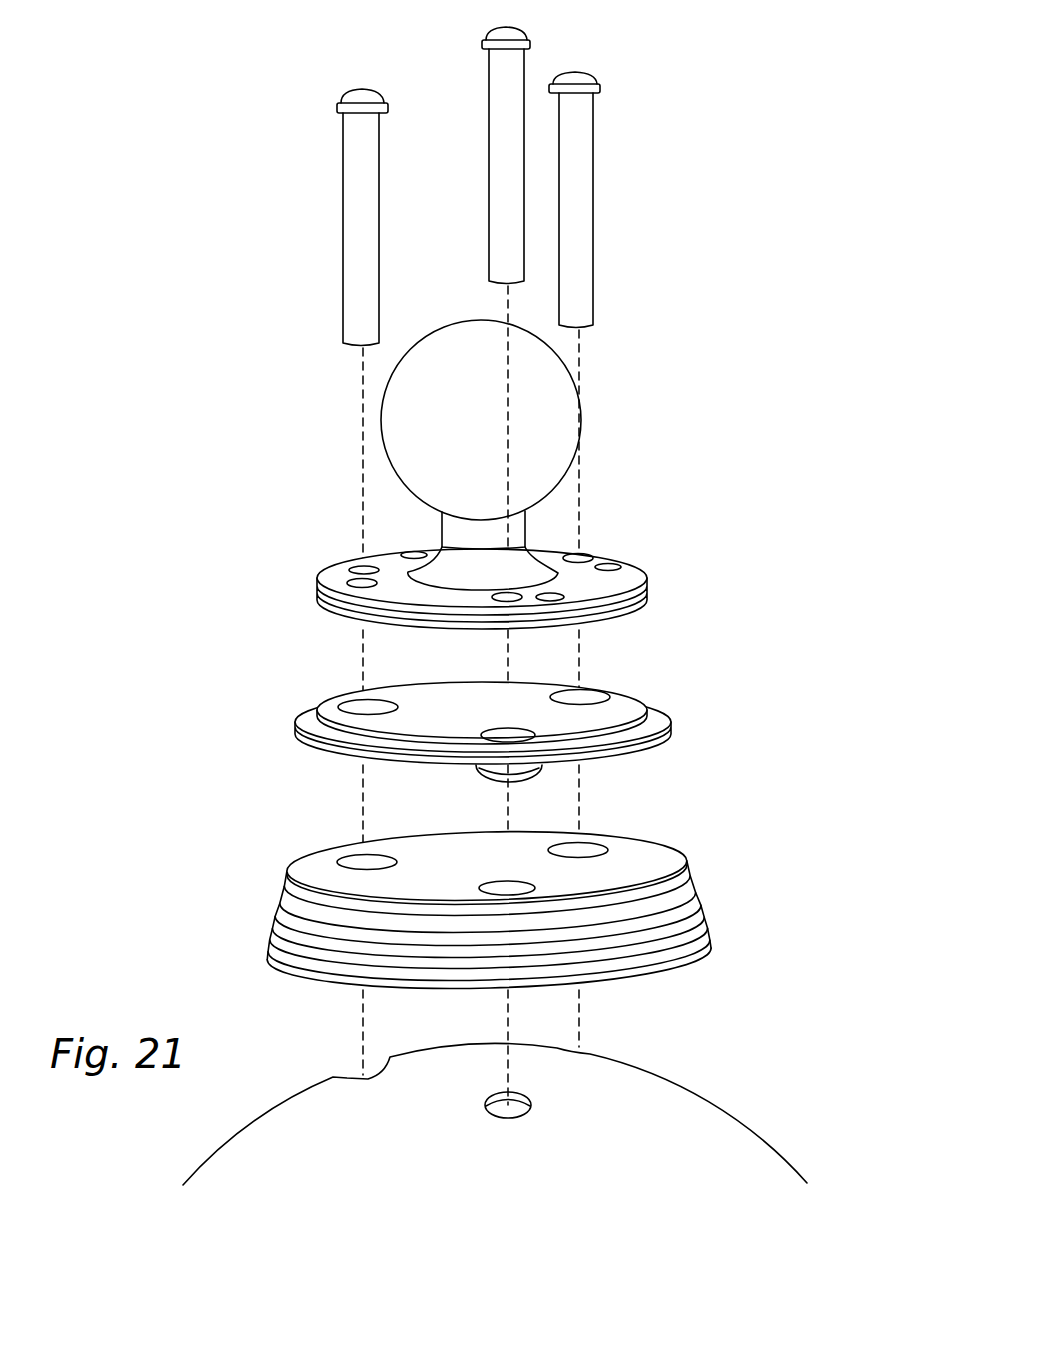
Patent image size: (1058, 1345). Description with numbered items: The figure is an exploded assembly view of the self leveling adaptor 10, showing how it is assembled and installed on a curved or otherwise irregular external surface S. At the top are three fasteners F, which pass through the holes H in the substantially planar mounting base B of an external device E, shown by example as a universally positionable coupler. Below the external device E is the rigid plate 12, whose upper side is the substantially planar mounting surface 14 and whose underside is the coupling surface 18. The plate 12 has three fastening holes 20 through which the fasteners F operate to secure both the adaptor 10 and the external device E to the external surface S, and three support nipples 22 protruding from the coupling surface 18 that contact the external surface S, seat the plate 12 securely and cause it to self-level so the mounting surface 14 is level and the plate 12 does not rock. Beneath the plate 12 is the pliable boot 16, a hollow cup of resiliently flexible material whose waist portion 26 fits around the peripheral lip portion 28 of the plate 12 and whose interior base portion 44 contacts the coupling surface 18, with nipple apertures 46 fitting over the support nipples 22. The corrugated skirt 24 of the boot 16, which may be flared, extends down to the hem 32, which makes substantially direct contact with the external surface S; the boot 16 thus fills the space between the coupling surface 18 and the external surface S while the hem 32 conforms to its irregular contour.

The self leveling adaptor 10 is at (463, 750).
The rigid plate 12 is at (494, 686).
The mounting surface 14 is at (333, 719).
The pliable boot 16 is at (478, 897).
The coupling surface 18 is at (490, 717).
The fastening holes 20 is at (351, 701).
The support nipples 22 is at (487, 783).
The corrugated skirt 24 is at (284, 898).
The waist portion 26 is at (294, 868).
The peripheral lip portion 28 is at (303, 729).
The skirt hem 32 is at (276, 958).
The interior base portion 44 is at (439, 860).
The nipple apertures 46 is at (358, 857).
The fastener F is at (339, 99).
The external device E is at (582, 404).
The holes H is at (352, 582).
The mounting base B is at (462, 567).
The external surface S is at (718, 1124).